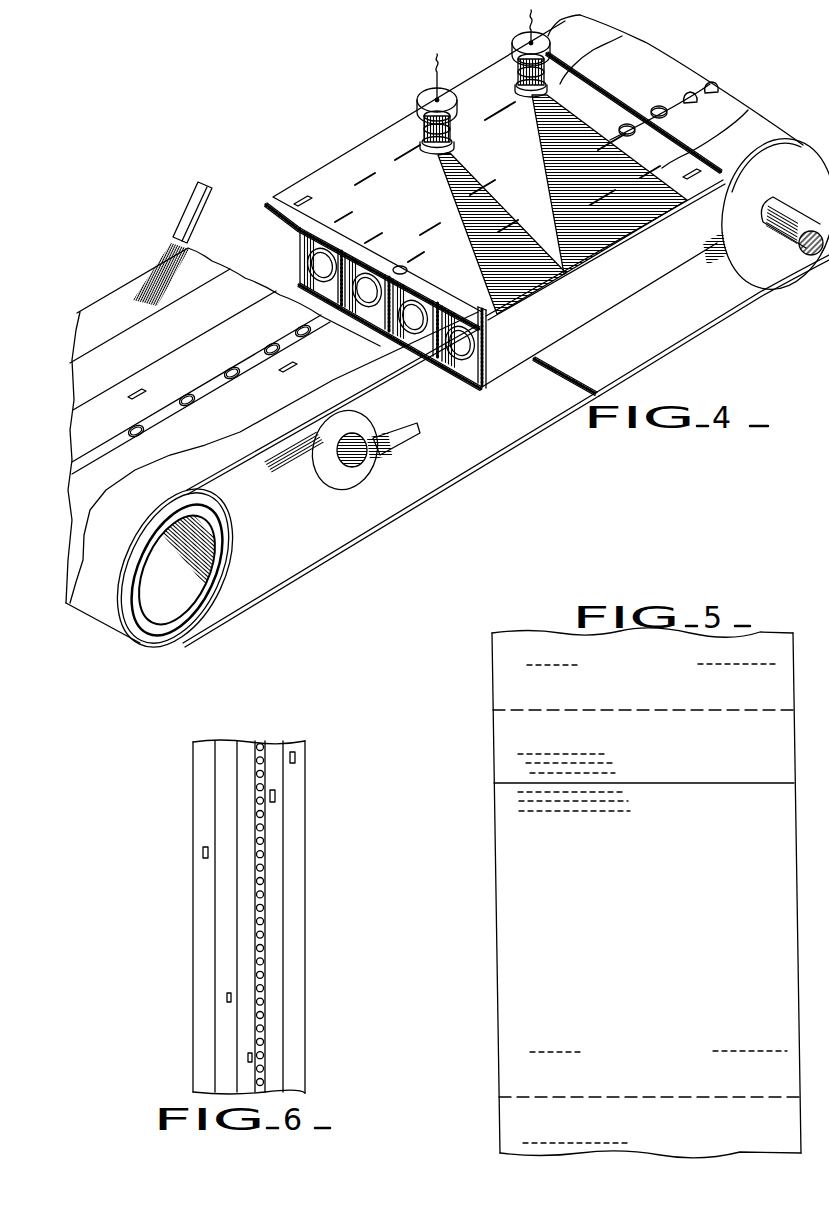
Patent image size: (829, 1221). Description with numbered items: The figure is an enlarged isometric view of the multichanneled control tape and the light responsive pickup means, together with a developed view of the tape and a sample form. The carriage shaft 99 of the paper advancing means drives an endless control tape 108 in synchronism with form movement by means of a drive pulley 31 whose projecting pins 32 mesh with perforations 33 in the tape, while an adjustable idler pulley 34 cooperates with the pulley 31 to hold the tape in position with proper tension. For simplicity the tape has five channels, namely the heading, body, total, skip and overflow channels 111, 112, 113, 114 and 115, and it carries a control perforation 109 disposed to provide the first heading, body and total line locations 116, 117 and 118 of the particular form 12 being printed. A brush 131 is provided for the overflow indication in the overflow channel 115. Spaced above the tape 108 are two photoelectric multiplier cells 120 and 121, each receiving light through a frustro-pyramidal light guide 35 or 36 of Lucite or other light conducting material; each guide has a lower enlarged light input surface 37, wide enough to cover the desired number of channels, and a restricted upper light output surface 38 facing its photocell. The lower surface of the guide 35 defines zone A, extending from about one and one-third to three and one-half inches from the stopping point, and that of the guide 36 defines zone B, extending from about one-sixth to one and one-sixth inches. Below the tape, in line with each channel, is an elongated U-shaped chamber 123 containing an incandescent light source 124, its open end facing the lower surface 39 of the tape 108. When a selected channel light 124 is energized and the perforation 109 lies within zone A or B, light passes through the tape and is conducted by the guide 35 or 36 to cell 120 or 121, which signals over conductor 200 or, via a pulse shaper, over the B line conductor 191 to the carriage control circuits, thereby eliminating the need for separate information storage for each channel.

In FIG. 5, the form 12 is at (500, 895).
In FIG. 4, the drive pulley 31 is at (803, 179).
In FIG. 4, the projecting pins 32 is at (719, 88).
In FIG. 4, the perforations 33 is at (147, 424).
In FIG. 4, the idler pulley 34 is at (225, 538).
In FIG. 4, the light guide 35 is at (590, 248).
In FIG. 4, the light guide 36 is at (385, 173).
In FIG. 4, the light input surface 37 is at (487, 336).
In FIG. 4, the light output surface 38 is at (517, 93).
In FIG. 4, the lower surface of the tape 39 is at (280, 202).
In FIG. 4, the carriage shaft 99 is at (787, 230).
In FIG. 4, the control tape 108 is at (358, 140).
In FIG. 6, the control tape 108 is at (192, 783).
In FIG. 4, the control perforation 109 is at (147, 390).
In FIG. 6, the control perforation 109 is at (248, 1057).
In FIG. 4, the heading channel 111 is at (197, 485).
In FIG. 6, the heading channel 111 is at (293, 780).
In FIG. 4, the body channel 112 is at (210, 425).
In FIG. 6, the body channel 112 is at (275, 877).
In FIG. 4, the total channel 113 is at (253, 313).
In FIG. 6, the total channel 113 is at (245, 750).
In FIG. 4, the skip channel 114 is at (228, 280).
In FIG. 6, the skip channel 114 is at (223, 865).
In FIG. 4, the overflow channel 115 is at (123, 305).
In FIG. 6, the overflow channel 115 is at (203, 895).
In FIG. 5, the first heading line location 116 is at (568, 753).
In FIG. 5, the first body line location 117 is at (615, 792).
In FIG. 5, the first total line location 118 is at (732, 1050).
In FIG. 4, the photoelectric cell 120 is at (517, 50).
In FIG. 4, the photoelectric cell 121 is at (423, 100).
In FIG. 4, the U-shaped chamber 123 is at (470, 368).
In FIG. 4, the light source 124 is at (370, 277).
In FIG. 4, the brush 131 is at (193, 222).
In FIG. 4, the B line conductor 191 is at (428, 67).
In FIG. 4, the conductor 200 is at (527, 20).